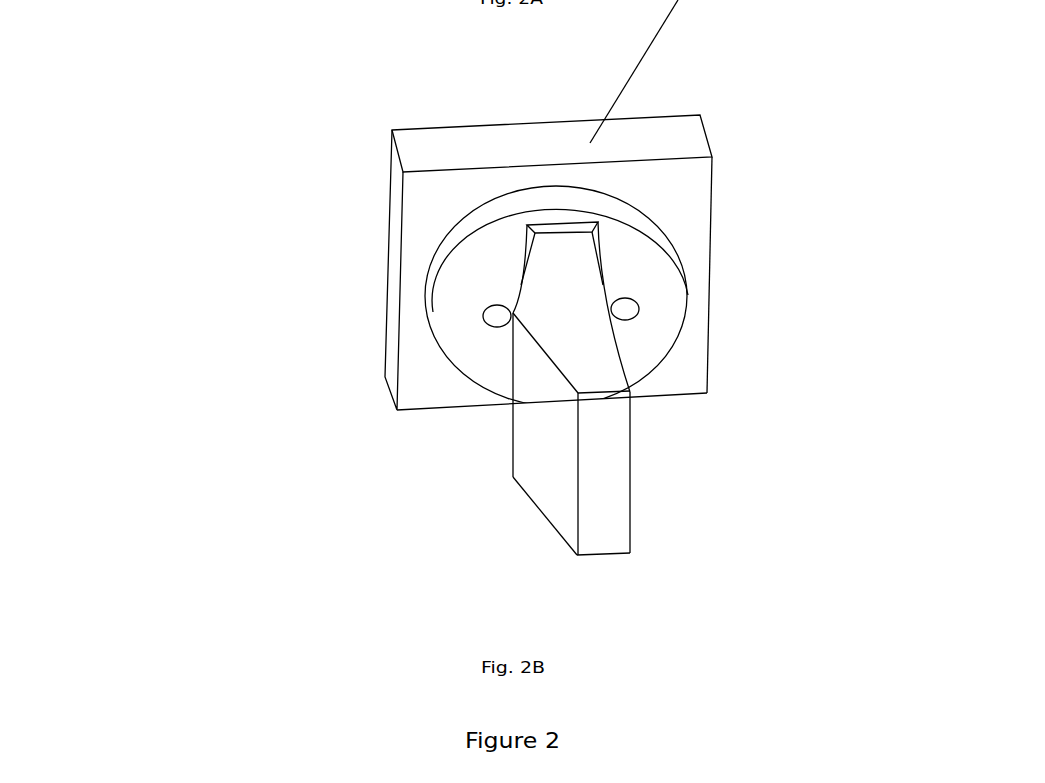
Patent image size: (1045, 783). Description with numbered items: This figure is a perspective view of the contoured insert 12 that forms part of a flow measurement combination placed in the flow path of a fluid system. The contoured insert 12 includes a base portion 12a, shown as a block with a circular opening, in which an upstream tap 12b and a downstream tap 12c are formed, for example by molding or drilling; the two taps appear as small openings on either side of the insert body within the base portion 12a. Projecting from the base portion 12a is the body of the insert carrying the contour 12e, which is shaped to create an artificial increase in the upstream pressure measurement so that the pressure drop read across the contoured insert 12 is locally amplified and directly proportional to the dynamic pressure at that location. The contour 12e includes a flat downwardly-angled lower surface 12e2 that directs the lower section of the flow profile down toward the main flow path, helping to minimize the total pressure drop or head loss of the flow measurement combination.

The contoured insert 12 is at (371, 405).
The base portion 12a is at (580, 202).
The upstream tap 12b is at (482, 300).
The downstream tap 12c is at (635, 302).
The contour 12e is at (502, 473).
The flat downwardly-angled lower surface 12e2 is at (547, 475).